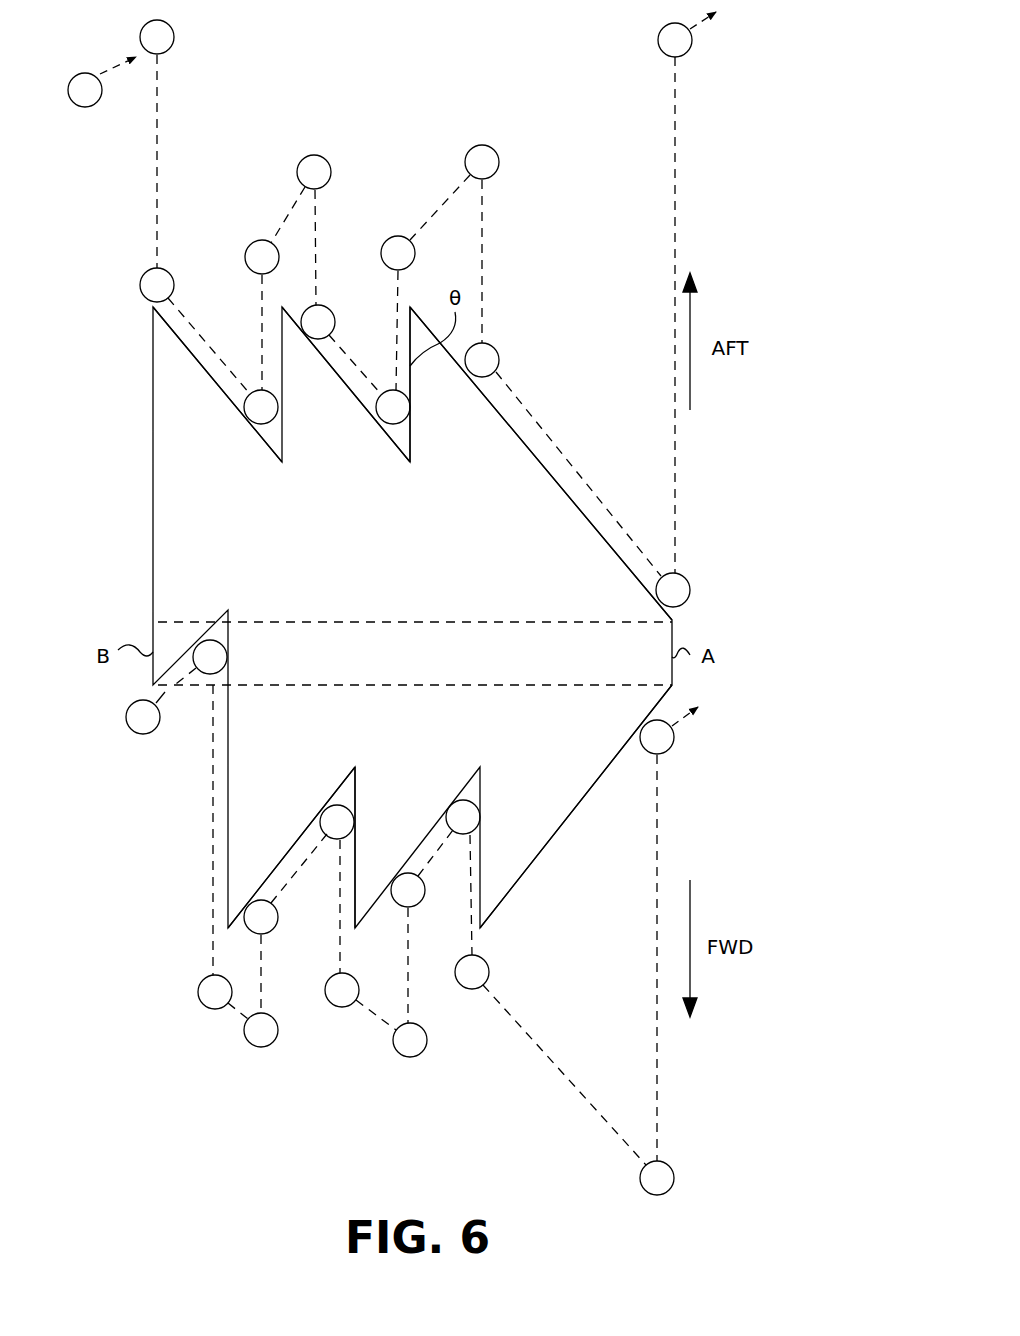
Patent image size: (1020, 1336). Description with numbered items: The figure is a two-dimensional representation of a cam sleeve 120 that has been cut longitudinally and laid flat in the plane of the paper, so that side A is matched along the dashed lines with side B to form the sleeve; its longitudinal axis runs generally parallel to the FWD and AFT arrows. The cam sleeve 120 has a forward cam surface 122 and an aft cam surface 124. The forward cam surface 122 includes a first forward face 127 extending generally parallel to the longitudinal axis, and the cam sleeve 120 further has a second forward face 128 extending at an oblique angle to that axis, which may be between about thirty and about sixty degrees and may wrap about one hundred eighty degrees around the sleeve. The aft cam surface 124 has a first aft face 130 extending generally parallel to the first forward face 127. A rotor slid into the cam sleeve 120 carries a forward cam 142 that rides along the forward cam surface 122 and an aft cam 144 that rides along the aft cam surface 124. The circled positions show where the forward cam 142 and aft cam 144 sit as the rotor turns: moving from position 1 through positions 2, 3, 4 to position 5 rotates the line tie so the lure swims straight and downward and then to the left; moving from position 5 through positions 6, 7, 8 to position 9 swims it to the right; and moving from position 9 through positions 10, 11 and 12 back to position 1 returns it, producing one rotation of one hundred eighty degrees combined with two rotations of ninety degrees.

The cam sleeve 120 is at (497, 251).
The forward cam surface 122 is at (287, 316).
The aft cam surface 124 is at (517, 882).
The first forward face 127 is at (409, 343).
The second forward face 128 is at (498, 408).
The first aft face 130 is at (353, 876).
The forward cam 142 is at (258, 1049).
The aft cam 144 is at (257, 390).
The position 1 is at (261, 718).
The position 2 is at (285, 626).
The position 3 is at (312, 564).
The position 4 is at (348, 667).
The position 5 is at (401, 723).
The position 6 is at (417, 629).
The position 7 is at (454, 550).
The position 8 is at (550, 754).
The position 9 is at (665, 884).
The position 10 is at (392, 586).
The position 11 is at (183, 497).
The position 12 is at (195, 643).